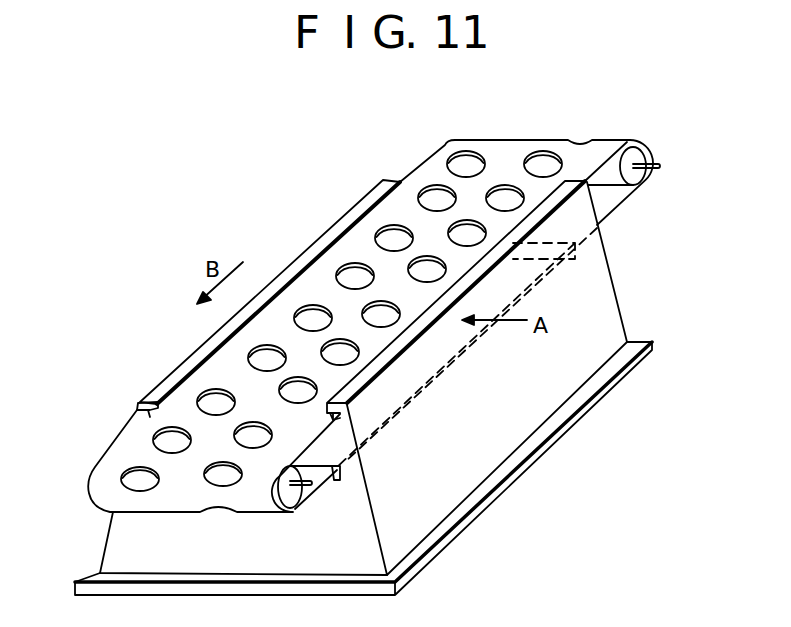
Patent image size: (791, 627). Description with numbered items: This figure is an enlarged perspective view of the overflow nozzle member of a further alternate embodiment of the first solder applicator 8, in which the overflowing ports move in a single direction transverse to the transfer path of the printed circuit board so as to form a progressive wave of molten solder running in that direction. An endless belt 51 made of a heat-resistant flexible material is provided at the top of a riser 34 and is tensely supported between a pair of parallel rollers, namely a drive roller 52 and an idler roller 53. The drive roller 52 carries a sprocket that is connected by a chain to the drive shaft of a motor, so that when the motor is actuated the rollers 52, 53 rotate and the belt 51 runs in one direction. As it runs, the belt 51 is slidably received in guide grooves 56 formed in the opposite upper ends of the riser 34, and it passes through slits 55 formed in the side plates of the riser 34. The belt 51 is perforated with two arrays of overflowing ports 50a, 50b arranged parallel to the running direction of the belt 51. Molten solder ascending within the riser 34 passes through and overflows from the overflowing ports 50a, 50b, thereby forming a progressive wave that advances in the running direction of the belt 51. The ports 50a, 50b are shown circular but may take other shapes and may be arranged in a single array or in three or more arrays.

The first solder applicator 8 is at (650, 275).
The riser 34 is at (511, 434).
The overflowing ports 50a is at (507, 186).
The overflowing ports 50b is at (464, 152).
The endless belt 51 is at (578, 157).
The drive roller 52 is at (650, 156).
The idler roller 53 is at (293, 498).
The slits 55 is at (336, 481).
The guide grooves 56 is at (151, 404).